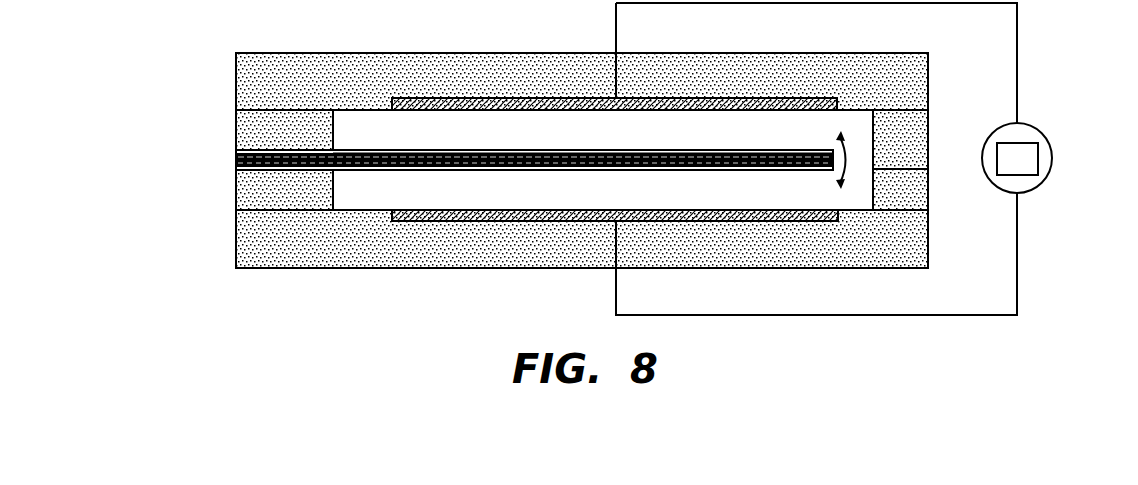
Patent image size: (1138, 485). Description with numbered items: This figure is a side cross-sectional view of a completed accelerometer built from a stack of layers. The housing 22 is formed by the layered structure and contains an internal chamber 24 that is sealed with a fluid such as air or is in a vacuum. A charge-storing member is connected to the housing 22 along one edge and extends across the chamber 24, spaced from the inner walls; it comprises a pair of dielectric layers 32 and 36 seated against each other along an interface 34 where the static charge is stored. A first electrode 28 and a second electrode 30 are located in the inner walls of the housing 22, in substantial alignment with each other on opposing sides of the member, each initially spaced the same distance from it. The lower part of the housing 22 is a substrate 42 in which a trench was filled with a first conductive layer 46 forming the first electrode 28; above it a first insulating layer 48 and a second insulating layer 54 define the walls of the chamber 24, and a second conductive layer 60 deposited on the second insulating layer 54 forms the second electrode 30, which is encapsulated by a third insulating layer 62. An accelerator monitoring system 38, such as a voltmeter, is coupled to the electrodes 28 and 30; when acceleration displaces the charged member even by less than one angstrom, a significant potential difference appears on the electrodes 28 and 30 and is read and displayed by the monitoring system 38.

The housing 22 is at (238, 42).
The chamber 24 is at (360, 130).
The first electrode 28 is at (838, 216).
The second electrode 30 is at (838, 106).
The layer of dielectric material 32 is at (447, 170).
The interface 34 is at (567, 150).
The layer of dielectric material 36 is at (440, 150).
The accelerator monitoring system 38 is at (1040, 158).
The substrate 42 is at (245, 253).
The first conductive layer 46 is at (412, 222).
The first insulating layer 48 is at (245, 190).
The second insulating layer 54 is at (247, 127).
The second conductive layer 60 is at (480, 100).
The third insulating layer 62 is at (388, 62).